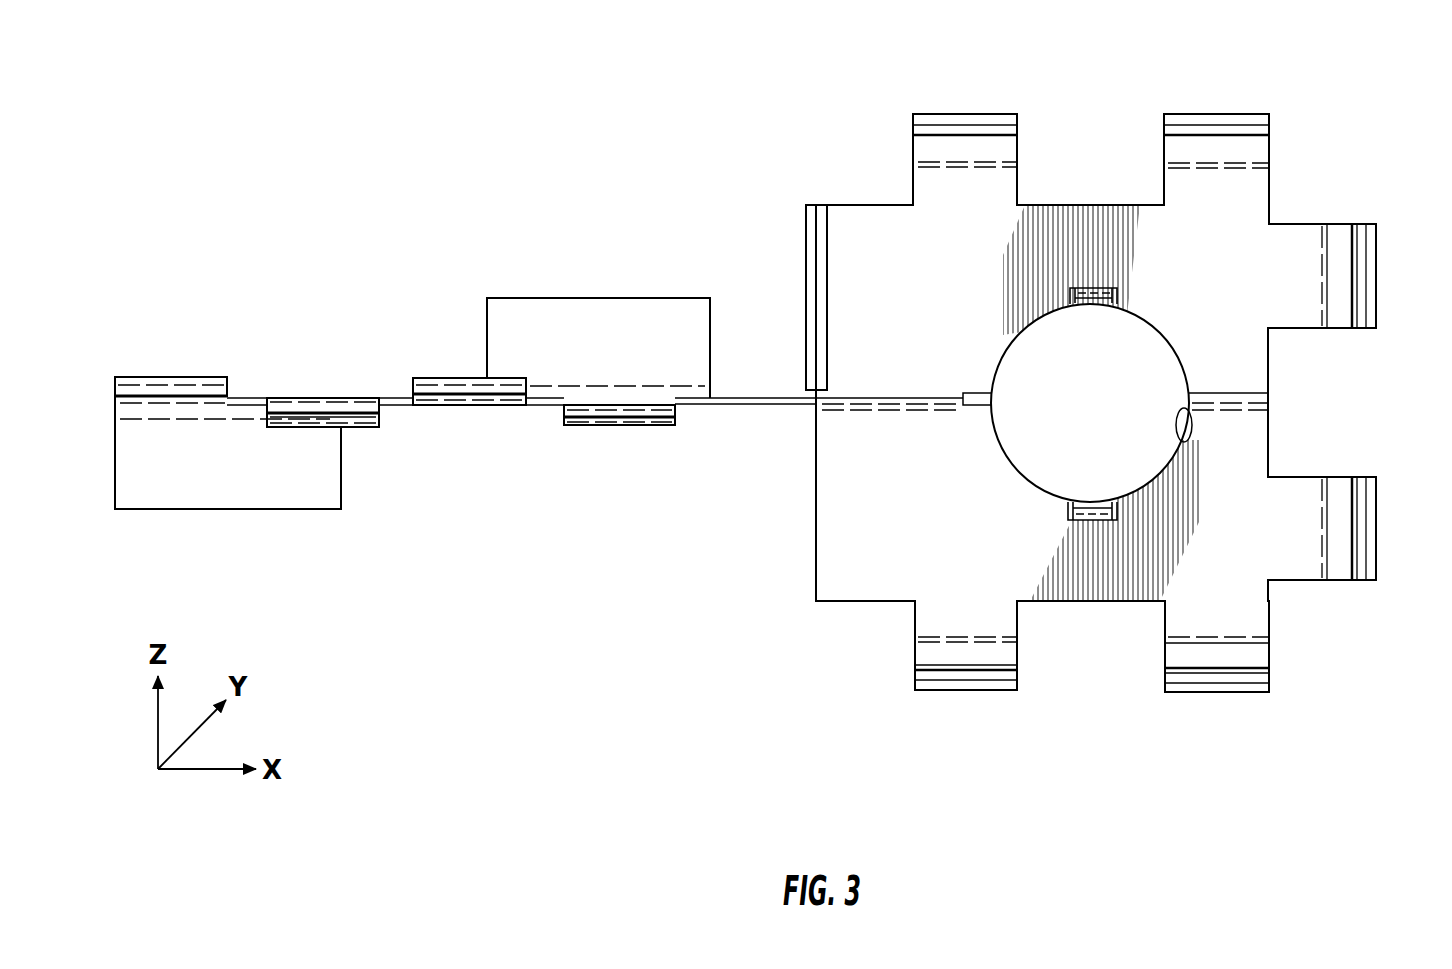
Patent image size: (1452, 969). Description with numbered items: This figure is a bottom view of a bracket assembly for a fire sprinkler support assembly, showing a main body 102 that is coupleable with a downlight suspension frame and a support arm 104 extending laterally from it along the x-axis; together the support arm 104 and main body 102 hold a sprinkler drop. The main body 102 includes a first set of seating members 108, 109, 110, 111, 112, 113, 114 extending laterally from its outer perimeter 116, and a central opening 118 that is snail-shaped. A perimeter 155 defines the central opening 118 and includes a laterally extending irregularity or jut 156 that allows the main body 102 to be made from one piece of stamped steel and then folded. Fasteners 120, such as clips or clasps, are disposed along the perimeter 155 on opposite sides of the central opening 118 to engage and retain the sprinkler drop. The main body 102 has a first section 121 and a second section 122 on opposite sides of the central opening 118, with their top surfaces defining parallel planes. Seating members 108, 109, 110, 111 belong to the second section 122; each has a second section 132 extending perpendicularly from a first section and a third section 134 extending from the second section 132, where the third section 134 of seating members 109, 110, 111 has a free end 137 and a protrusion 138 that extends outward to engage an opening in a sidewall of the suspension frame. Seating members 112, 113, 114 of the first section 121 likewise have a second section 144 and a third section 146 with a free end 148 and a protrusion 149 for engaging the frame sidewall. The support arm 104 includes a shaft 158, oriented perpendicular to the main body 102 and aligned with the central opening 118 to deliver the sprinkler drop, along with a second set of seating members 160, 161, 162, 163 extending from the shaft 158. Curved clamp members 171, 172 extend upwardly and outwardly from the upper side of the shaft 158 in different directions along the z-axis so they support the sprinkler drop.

The main body 102 is at (1091, 115).
The support arm 104 is at (394, 406).
The seating member 108 is at (795, 263).
The seating member 109 is at (942, 100).
The seating member 110 is at (1200, 92).
The seating member 111 is at (1392, 242).
The seating member 112 is at (1395, 505).
The seating member 113 is at (1222, 700).
The seating member 114 is at (968, 712).
The outer perimeter 116 is at (1043, 205).
The central opening 118 is at (1145, 353).
The fastener 120 is at (1092, 292).
The first section 121 is at (1118, 572).
The second section 122 is at (892, 245).
The second section 132 is at (915, 118).
The third section 134 is at (952, 160).
The free end 137 is at (998, 165).
The protrusion 138 is at (978, 135).
The second section 144 is at (1005, 686).
The third section 146 is at (945, 692).
The free end 148 is at (924, 645).
The protrusion 149 is at (926, 670).
The perimeter 155 is at (1190, 435).
The jut 156 is at (988, 412).
The shaft 158 is at (748, 398).
The seating member 160 is at (172, 368).
The seating member 161 is at (322, 392).
The seating member 162 is at (477, 412).
The seating member 163 is at (625, 433).
The clamp member 171 is at (232, 498).
The clamp member 172 is at (583, 310).